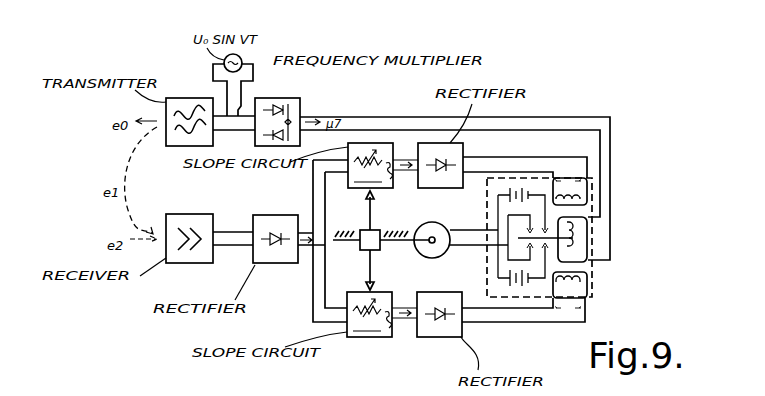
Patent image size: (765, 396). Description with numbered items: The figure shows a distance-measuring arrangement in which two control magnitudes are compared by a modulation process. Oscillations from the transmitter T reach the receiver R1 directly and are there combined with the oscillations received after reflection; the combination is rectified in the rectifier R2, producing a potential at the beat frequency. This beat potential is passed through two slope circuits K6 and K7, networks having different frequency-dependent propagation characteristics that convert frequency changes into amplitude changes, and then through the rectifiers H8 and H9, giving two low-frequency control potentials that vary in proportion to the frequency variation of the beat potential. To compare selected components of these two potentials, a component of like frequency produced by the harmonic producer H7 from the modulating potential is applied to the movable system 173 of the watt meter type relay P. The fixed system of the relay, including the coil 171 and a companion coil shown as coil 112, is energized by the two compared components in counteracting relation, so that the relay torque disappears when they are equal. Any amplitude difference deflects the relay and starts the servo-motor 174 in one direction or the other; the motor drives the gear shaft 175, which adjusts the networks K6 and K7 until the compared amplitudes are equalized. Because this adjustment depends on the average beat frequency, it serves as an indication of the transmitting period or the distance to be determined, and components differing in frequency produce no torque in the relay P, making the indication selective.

The relay coil E6 112 is at (589, 196).
The coil of the fixed system 171 is at (588, 295).
The movable system 173 is at (578, 239).
The servo-motor 174 is at (438, 227).
The gear shaft 175 is at (379, 236).
The transmitter T is at (178, 98).
The frequency multiplying circuit H7 is at (268, 98).
The rectifier H8 is at (463, 149).
The rectifier H9 is at (447, 338).
The slope circuit K6 is at (388, 141).
The slope circuit K7 is at (361, 338).
The receiver R1 is at (188, 263).
The rectifier R2 is at (267, 263).
The watt meter type relay P is at (593, 273).